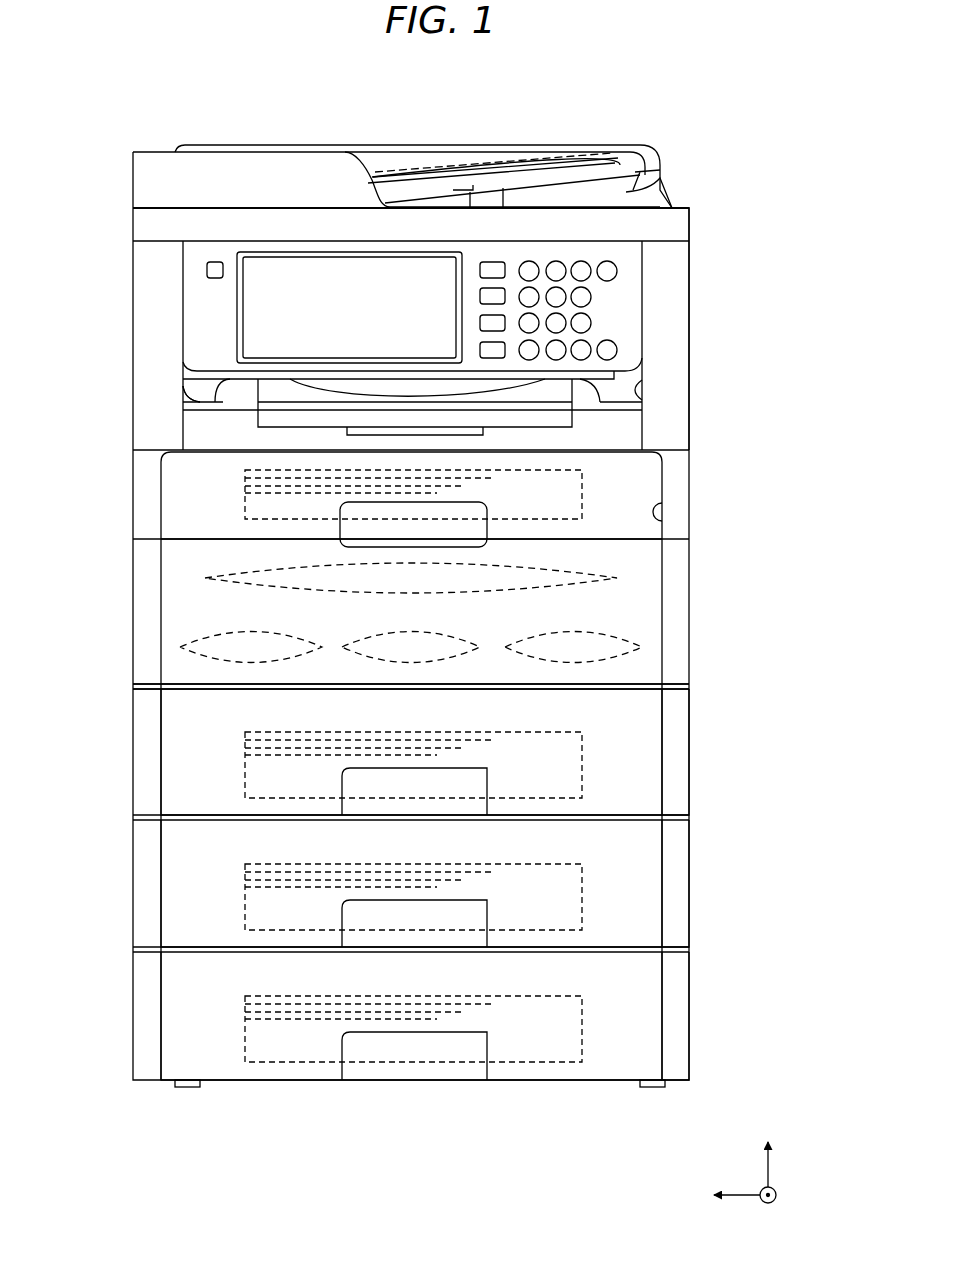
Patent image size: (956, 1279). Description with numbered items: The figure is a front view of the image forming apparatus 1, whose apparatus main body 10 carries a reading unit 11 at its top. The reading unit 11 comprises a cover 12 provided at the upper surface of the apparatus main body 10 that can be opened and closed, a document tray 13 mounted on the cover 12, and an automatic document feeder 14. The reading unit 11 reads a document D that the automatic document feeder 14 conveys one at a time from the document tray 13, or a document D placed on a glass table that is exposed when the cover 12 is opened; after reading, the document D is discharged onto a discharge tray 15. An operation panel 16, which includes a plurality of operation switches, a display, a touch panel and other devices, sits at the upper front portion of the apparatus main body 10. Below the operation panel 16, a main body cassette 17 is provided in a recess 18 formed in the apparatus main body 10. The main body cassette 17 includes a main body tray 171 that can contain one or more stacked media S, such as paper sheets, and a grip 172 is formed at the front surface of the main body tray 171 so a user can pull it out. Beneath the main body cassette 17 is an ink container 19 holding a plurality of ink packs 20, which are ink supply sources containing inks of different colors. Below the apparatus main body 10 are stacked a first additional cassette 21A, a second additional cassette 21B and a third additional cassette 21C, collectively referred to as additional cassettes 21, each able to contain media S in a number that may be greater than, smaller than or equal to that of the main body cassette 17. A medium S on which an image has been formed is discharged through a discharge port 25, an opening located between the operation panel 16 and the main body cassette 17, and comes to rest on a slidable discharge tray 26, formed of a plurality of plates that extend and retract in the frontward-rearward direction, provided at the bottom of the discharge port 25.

The image forming apparatus 1 is at (665, 105).
The apparatus main body 10 is at (692, 290).
The reading unit 11 is at (133, 192).
The cover 12 is at (692, 225).
The document tray 13 is at (545, 163).
The automatic document feeder 14 is at (247, 162).
The discharge tray 15 is at (633, 190).
The operation panel 16 is at (192, 295).
The main body cassette 17 is at (153, 449).
The main body tray 171 is at (640, 492).
The grip 172 is at (468, 509).
The recess 18 is at (665, 522).
The ink container 19 is at (157, 575).
The ink packs 20 is at (578, 570).
The additional cassettes 21 is at (446, 880).
The first additional cassette 21A is at (694, 708).
The second additional cassette 21B is at (694, 840).
The third additional cassette 21C is at (694, 972).
The discharge port 25 is at (643, 387).
The discharge tray 26 is at (197, 395).
The document D is at (446, 165).
The media S is at (245, 512).